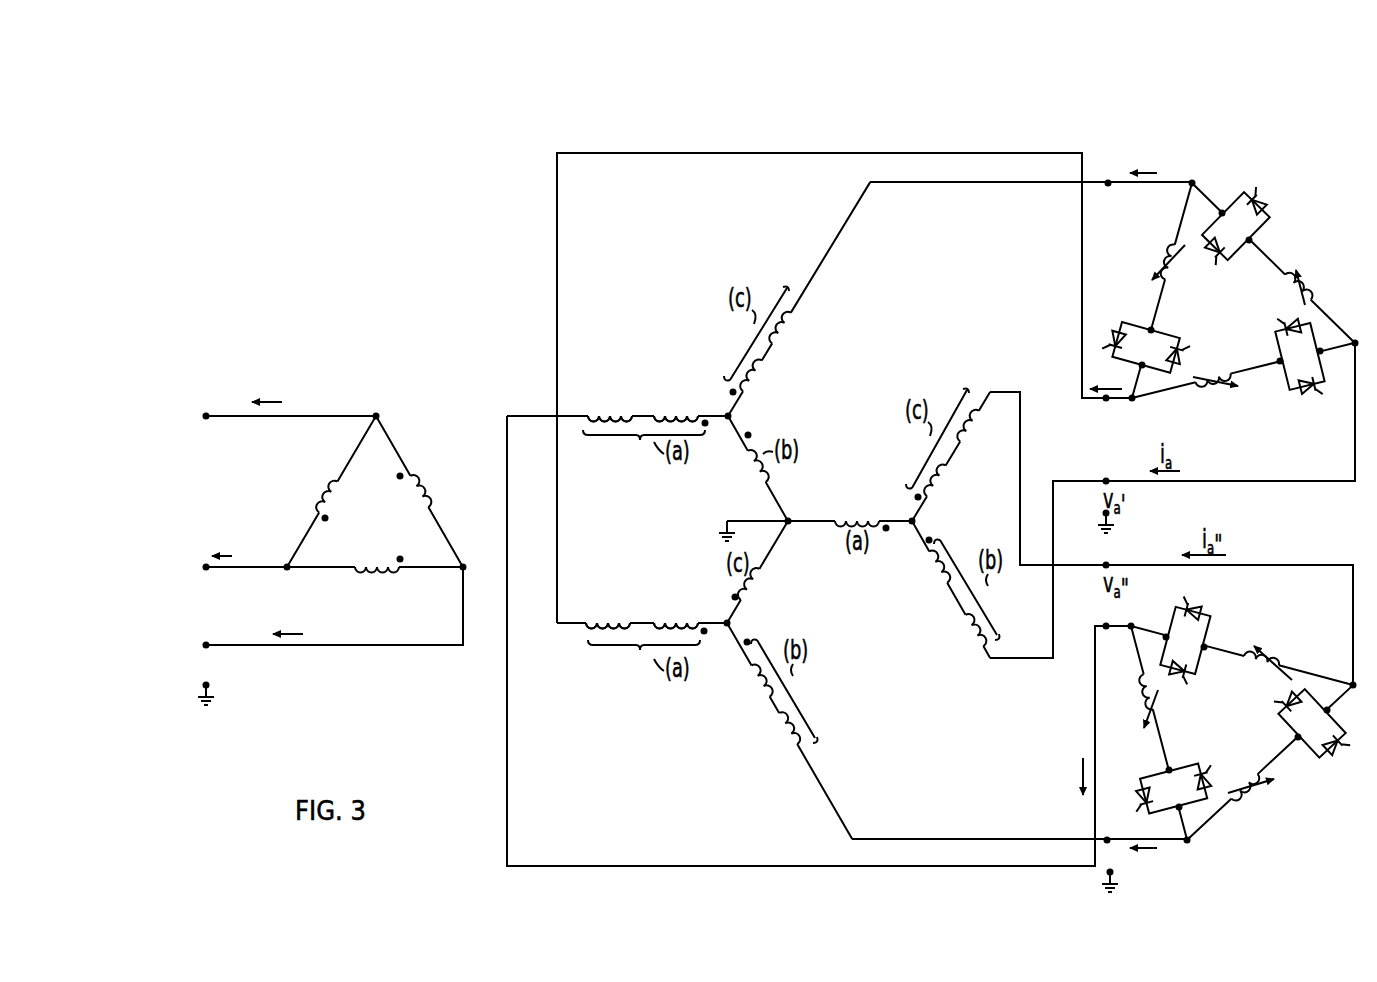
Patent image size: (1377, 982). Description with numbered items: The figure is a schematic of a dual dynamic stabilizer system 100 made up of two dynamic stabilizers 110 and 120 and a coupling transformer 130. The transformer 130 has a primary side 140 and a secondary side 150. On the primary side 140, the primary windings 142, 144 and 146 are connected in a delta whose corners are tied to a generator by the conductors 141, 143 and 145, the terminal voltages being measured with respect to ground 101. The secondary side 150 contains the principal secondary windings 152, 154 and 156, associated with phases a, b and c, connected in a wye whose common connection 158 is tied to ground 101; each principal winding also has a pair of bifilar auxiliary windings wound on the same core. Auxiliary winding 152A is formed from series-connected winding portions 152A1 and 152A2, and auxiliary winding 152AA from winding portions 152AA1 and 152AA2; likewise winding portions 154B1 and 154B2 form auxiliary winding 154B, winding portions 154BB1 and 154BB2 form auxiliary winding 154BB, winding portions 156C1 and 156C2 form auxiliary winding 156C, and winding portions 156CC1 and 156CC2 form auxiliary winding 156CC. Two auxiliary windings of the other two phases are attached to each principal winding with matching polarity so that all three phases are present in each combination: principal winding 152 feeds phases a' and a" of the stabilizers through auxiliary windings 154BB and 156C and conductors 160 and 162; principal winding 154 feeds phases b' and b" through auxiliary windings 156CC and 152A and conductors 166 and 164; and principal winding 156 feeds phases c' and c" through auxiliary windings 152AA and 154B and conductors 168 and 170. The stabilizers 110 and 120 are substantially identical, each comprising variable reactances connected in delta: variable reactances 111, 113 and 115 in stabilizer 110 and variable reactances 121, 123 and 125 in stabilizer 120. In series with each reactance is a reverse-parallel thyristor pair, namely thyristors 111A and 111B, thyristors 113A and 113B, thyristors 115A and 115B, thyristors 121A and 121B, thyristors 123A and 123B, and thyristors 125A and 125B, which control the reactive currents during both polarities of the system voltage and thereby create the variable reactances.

The dual dynamic stabilizer system 100 is at (500, 222).
The ground 101 is at (212, 686).
The dynamic stabilizer 110 is at (1233, 288).
The variable reactance 111 is at (1299, 274).
The thyristor 111A is at (1269, 204).
The thyristor 111B is at (1202, 264).
The variable reactance 113 is at (1210, 394).
The thyristor 113A is at (1294, 320).
The thyristor 113B is at (1310, 396).
The variable reactance 115 is at (1160, 253).
The thyristor 115A is at (1116, 321).
The thyristor 115B is at (1186, 351).
The dynamic stabilizer 120 is at (1216, 732).
The variable reactance 121 is at (1279, 658).
The thyristor 121A is at (1194, 608).
The thyristor 121B is at (1198, 682).
The variable reactance 123 is at (1244, 808).
The thyristor 123A is at (1277, 702).
The thyristor 123B is at (1338, 758).
The variable reactance 125 is at (1140, 710).
The thyristor 125A is at (1116, 788).
The thyristor 125B is at (1204, 774).
The coupling transformer 130 is at (490, 390).
The primary side 140 is at (336, 523).
The conductor 141 is at (400, 644).
The primary winding 142 is at (366, 577).
The conductor 143 is at (320, 418).
The primary winding 144 is at (425, 491).
The conductor 145 is at (266, 566).
The primary winding 146 is at (317, 490).
The secondary side 150 is at (921, 371).
The principal secondary winding 152 is at (838, 535).
The auxiliary secondary winding 152A is at (644, 444).
The winding portion 152A1 is at (624, 412).
The winding portion 152A2 is at (692, 412).
The auxiliary secondary winding 152AA is at (642, 656).
The winding portion 152AA1 is at (620, 619).
The winding portion 152AA2 is at (690, 619).
The principal secondary winding 154 is at (758, 472).
The auxiliary secondary winding 154B is at (803, 673).
The winding portion 154B1 is at (784, 731).
The winding portion 154B2 is at (754, 685).
The auxiliary secondary winding 154BB is at (988, 584).
The winding portion 154BB1 is at (967, 632).
The winding portion 154BB2 is at (932, 564).
The principal secondary winding 156 is at (760, 574).
The auxiliary secondary winding 156C is at (928, 454).
The winding portion 156C1 is at (965, 440).
The winding portion 156C2 is at (943, 485).
The auxiliary secondary winding 156CC is at (752, 342).
The winding portion 156CC1 is at (795, 314).
The winding portion 156CC2 is at (771, 366).
The common connection 158 is at (790, 518).
The conductor 160 is at (1010, 660).
The conductor 162 is at (1012, 392).
The conductor 164 is at (507, 449).
The conductor 166 is at (846, 230).
The conductor 168 is at (1082, 247).
The conductor 170 is at (968, 834).